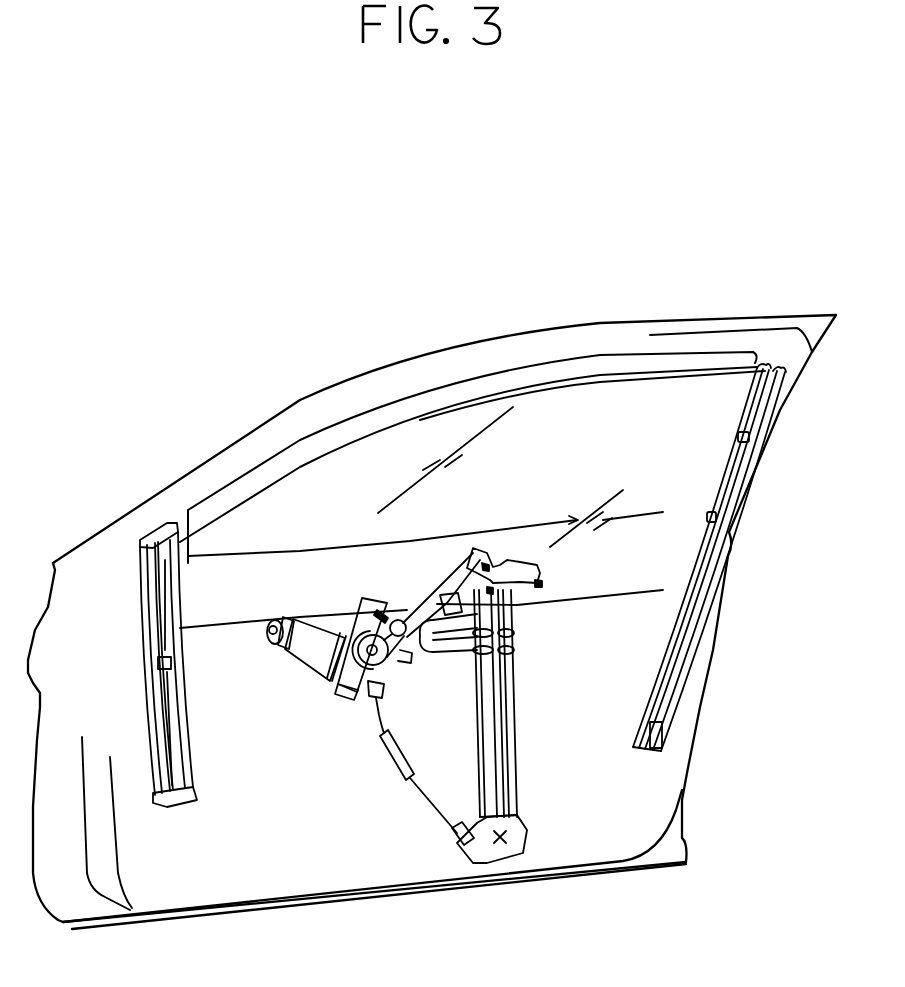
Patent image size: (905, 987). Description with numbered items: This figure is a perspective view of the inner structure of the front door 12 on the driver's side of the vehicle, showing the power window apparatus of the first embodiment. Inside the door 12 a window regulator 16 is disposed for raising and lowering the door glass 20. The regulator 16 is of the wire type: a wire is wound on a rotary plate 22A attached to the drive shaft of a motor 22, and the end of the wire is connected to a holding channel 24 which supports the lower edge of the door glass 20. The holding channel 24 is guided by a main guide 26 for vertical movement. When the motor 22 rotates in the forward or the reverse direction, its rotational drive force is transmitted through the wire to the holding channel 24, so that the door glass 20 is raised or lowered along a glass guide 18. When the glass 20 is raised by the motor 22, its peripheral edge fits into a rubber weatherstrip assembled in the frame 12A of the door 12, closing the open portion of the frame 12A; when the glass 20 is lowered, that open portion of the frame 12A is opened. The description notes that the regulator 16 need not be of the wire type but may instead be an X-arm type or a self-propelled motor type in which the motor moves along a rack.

The front door 12 is at (243, 432).
The frame 12A is at (537, 343).
The window regulator 16 is at (385, 767).
The glass guide 18 is at (187, 803).
The door glass 20 is at (438, 402).
The motor 22 is at (303, 652).
The rotary plate 22A is at (350, 687).
The holding channel 24 is at (450, 647).
The main guide 26 is at (510, 733).